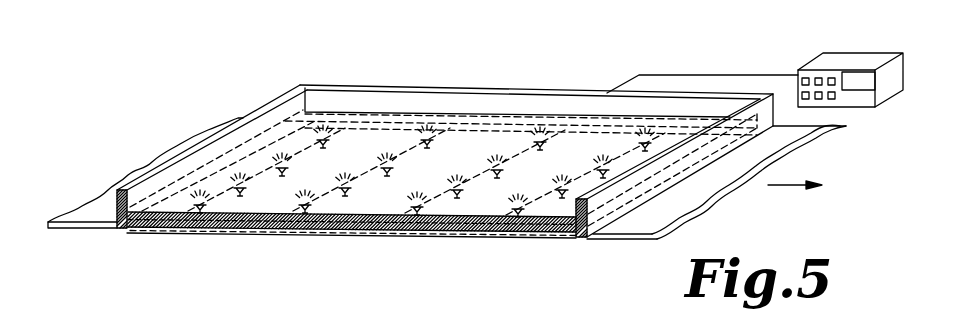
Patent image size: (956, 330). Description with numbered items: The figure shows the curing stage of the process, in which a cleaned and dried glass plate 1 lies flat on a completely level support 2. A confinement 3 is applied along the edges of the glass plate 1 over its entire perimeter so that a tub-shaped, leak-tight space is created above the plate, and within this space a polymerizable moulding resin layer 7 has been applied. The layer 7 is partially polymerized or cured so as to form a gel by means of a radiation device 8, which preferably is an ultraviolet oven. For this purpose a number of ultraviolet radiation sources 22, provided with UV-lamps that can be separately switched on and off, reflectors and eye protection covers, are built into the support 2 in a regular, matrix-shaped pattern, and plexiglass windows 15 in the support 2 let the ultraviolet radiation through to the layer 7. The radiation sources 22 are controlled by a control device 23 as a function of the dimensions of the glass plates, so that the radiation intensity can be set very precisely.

The glass plate 1 is at (190, 228).
The support 2 is at (66, 229).
The confinement 3 is at (153, 170).
The polymerizable layer 7 is at (380, 213).
The radiation device 8 is at (572, 13).
The plexiglass windows 15 is at (530, 237).
The ultraviolet radiation sources 22 is at (423, 150).
The control device 23 is at (862, 105).